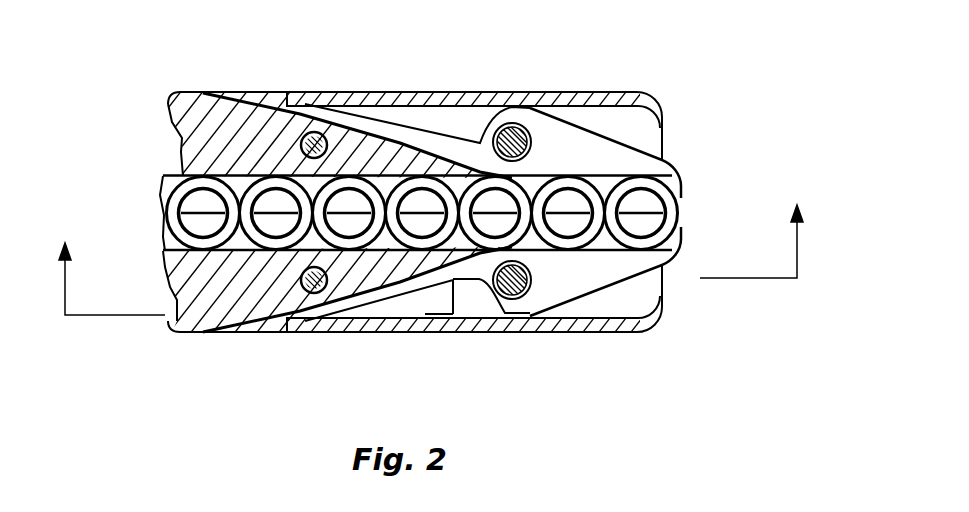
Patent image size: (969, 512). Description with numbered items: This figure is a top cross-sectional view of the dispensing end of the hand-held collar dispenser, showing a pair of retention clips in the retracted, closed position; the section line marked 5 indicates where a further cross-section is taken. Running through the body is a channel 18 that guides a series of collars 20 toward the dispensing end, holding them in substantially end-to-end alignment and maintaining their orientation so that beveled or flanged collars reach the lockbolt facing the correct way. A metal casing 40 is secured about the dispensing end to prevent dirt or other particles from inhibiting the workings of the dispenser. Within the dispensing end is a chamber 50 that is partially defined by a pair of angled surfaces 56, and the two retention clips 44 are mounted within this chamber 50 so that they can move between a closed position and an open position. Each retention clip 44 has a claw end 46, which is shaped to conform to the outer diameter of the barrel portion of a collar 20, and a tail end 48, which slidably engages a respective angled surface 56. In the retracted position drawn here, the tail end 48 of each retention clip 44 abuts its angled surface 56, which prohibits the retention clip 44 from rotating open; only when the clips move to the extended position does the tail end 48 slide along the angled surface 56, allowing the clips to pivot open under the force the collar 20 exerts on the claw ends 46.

The channel 18 is at (167, 245).
The collar 20 is at (182, 190).
The metal casing 40 is at (597, 102).
The retention clip 44 is at (541, 148).
The claw end 46 is at (665, 170).
The tail end 48 is at (327, 112).
The chamber 50 is at (420, 117).
The angled surface 56 is at (262, 97).
The section line 5- 5 is at (431, 245).